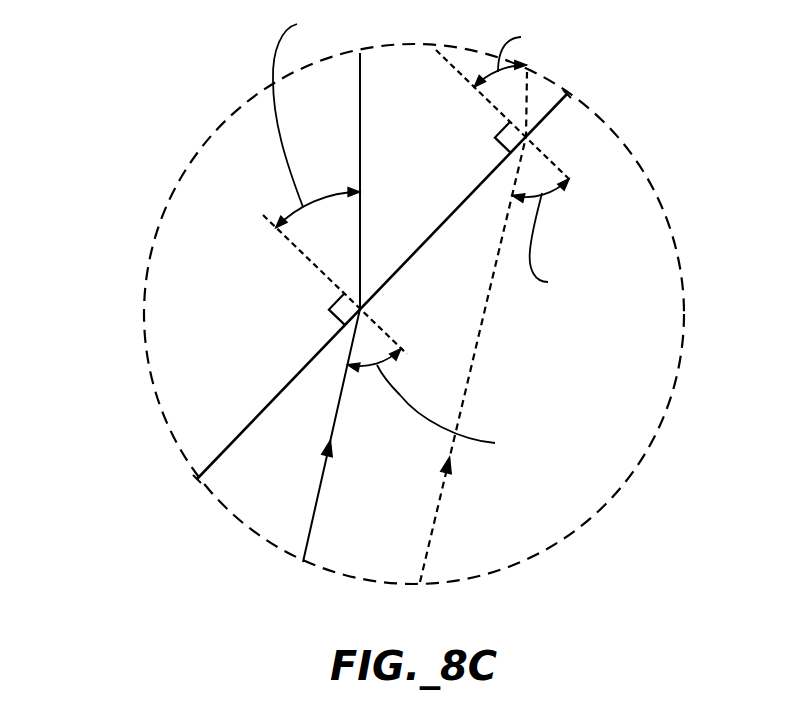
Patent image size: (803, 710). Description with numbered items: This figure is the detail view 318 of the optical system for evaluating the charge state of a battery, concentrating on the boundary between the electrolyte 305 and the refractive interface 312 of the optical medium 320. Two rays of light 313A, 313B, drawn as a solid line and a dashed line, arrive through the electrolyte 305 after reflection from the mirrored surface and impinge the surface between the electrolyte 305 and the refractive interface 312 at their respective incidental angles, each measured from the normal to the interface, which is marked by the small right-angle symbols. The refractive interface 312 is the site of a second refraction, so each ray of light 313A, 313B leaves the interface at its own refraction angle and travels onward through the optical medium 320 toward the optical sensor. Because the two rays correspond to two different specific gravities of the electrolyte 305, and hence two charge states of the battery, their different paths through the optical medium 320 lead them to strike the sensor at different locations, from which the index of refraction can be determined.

The electrolyte 305 is at (243, 478).
The refractive interface 312 is at (224, 452).
The light 313A is at (307, 522).
The light 313B is at (427, 550).
The view 318 is at (143, 281).
The optical medium 320 is at (442, 158).